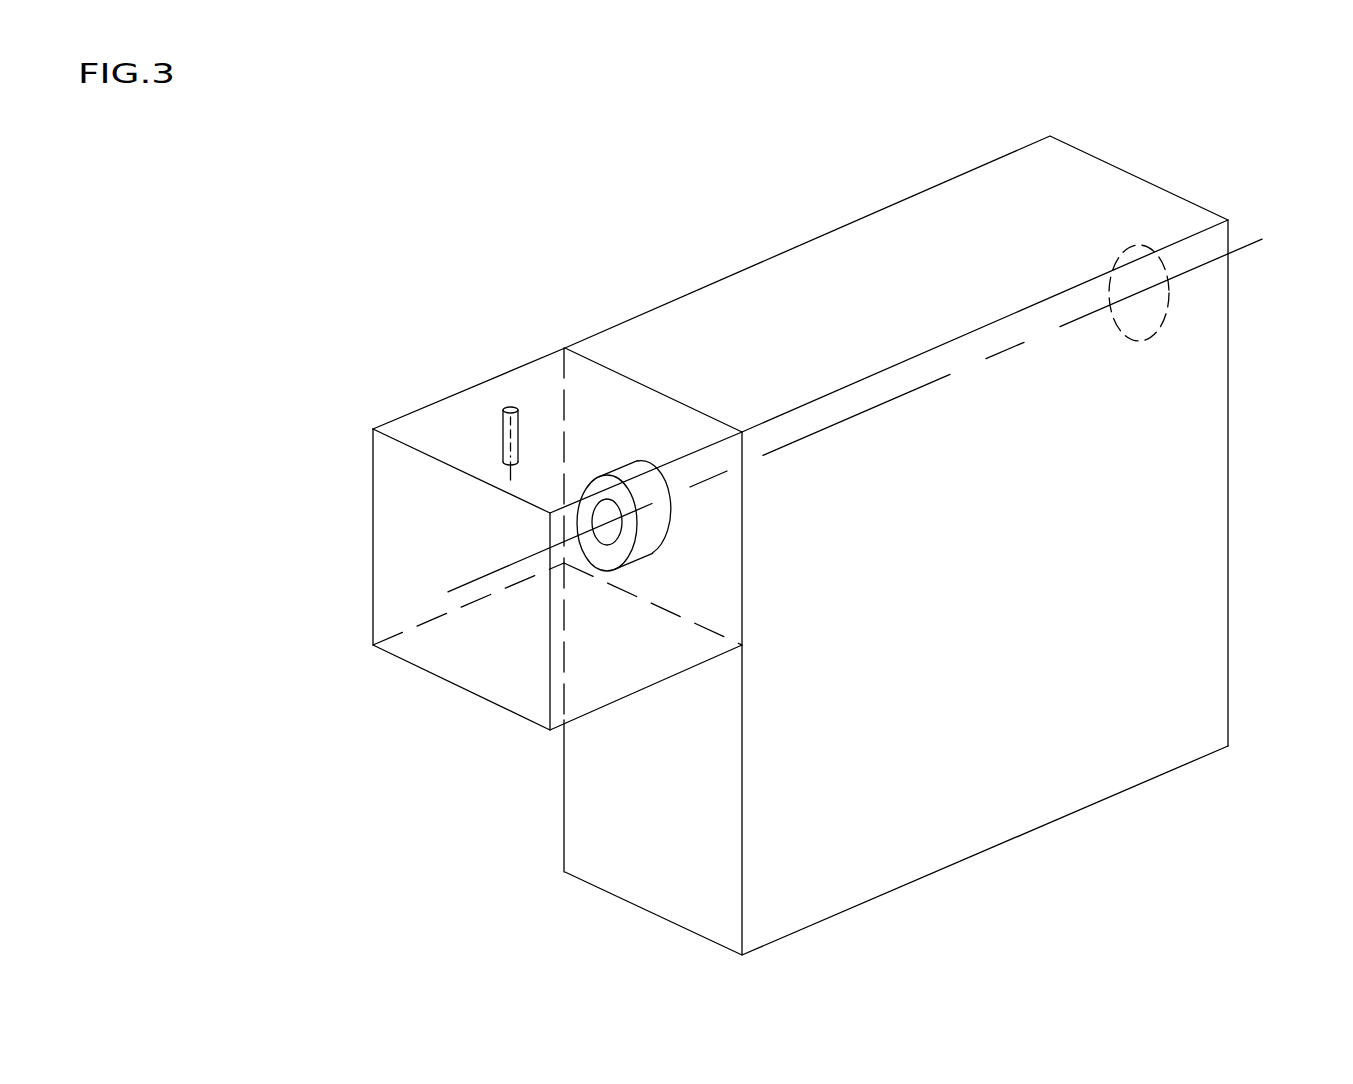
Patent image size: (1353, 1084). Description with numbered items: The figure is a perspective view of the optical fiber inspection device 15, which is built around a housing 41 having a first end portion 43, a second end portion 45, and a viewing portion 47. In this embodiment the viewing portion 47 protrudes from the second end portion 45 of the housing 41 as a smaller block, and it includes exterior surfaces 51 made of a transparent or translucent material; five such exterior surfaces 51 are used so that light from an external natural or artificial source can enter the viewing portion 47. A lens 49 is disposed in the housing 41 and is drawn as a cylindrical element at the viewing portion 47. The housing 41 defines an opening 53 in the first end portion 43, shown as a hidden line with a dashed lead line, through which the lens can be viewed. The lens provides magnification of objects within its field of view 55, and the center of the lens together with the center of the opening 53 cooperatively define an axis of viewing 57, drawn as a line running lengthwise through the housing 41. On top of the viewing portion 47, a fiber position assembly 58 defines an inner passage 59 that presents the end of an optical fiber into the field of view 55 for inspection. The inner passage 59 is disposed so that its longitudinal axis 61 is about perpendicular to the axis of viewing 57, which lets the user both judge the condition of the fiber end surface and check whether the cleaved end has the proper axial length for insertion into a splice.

The optical fiber inspection device 15 is at (372, 270).
The housing 41 is at (820, 258).
The first end portion 43 is at (1195, 200).
The second end portion 45 is at (588, 843).
The viewing portion 47 is at (380, 498).
The lens 49 is at (647, 463).
The exterior surface 51 is at (420, 428).
The opening 53 is at (1157, 327).
The field of view 55 is at (607, 533).
The axis of viewing 57 is at (1246, 244).
The fiber position assembly 58 is at (528, 420).
The inner passage 59 is at (510, 392).
The longitudinal axis 61 is at (503, 457).